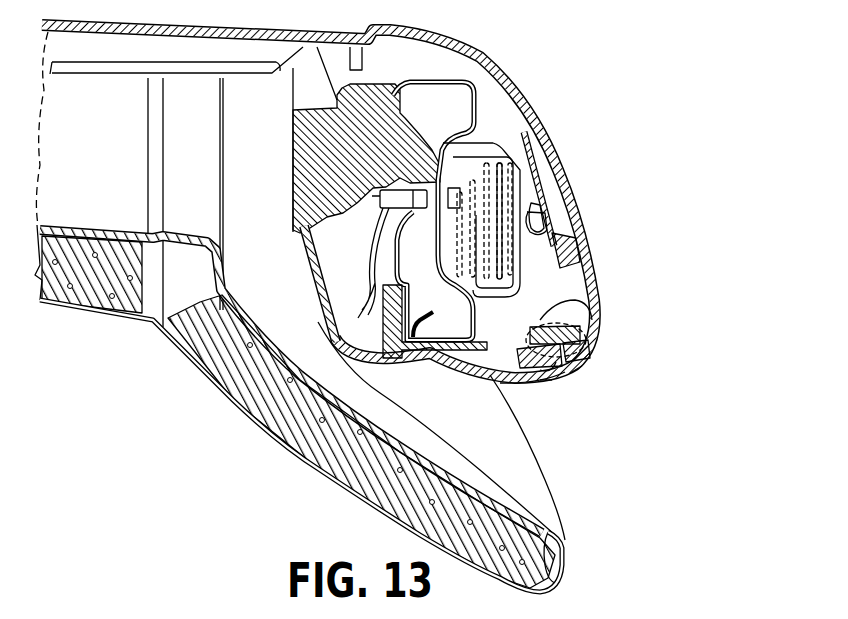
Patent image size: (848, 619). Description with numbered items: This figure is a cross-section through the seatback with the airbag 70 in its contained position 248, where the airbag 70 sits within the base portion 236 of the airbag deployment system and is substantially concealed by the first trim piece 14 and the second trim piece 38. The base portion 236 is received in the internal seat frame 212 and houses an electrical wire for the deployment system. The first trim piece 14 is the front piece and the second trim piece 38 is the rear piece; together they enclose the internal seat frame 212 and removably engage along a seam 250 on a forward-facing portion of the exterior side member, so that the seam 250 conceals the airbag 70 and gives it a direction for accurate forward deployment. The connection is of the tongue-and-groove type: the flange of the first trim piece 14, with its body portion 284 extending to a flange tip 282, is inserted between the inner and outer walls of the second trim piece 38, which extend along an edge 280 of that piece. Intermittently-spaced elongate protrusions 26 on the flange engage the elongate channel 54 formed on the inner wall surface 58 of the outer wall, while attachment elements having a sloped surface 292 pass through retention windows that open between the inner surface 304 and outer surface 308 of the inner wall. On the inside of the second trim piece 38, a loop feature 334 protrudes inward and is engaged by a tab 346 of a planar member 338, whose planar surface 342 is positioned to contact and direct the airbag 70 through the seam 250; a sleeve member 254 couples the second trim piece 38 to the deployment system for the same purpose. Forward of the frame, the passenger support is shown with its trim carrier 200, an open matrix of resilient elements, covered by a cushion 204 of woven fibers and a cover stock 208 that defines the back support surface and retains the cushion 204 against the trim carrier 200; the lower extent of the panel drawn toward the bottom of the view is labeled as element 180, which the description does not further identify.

The first trim piece 14 is at (447, 368).
The intermittently-spaced elongate protrusions 26 is at (551, 365).
The second trim piece 38 is at (507, 100).
The elongate channel 54 is at (546, 380).
The inner wall surface 58 is at (576, 372).
The airbag 70 is at (563, 187).
The inner panel 180 is at (520, 490).
The trim carrier 200 is at (215, 277).
The cushion 204 is at (308, 463).
The cover stock 208 is at (350, 497).
The internal seat frame 212 is at (433, 80).
The base portion 236 is at (373, 250).
The contained position 248 is at (660, 208).
The seam 250 is at (530, 392).
The sleeve member 254 is at (484, 146).
The edge 280 is at (537, 376).
The flange tip 282 is at (578, 362).
The body portion 284 is at (565, 313).
The sloped surface 292 is at (590, 303).
The inner surface 304 is at (595, 343).
The outer surface 308 is at (592, 328).
The loop feature 334 is at (547, 122).
The planar member 338 is at (548, 190).
The planar surface 342 is at (503, 202).
The tab 346 is at (580, 248).